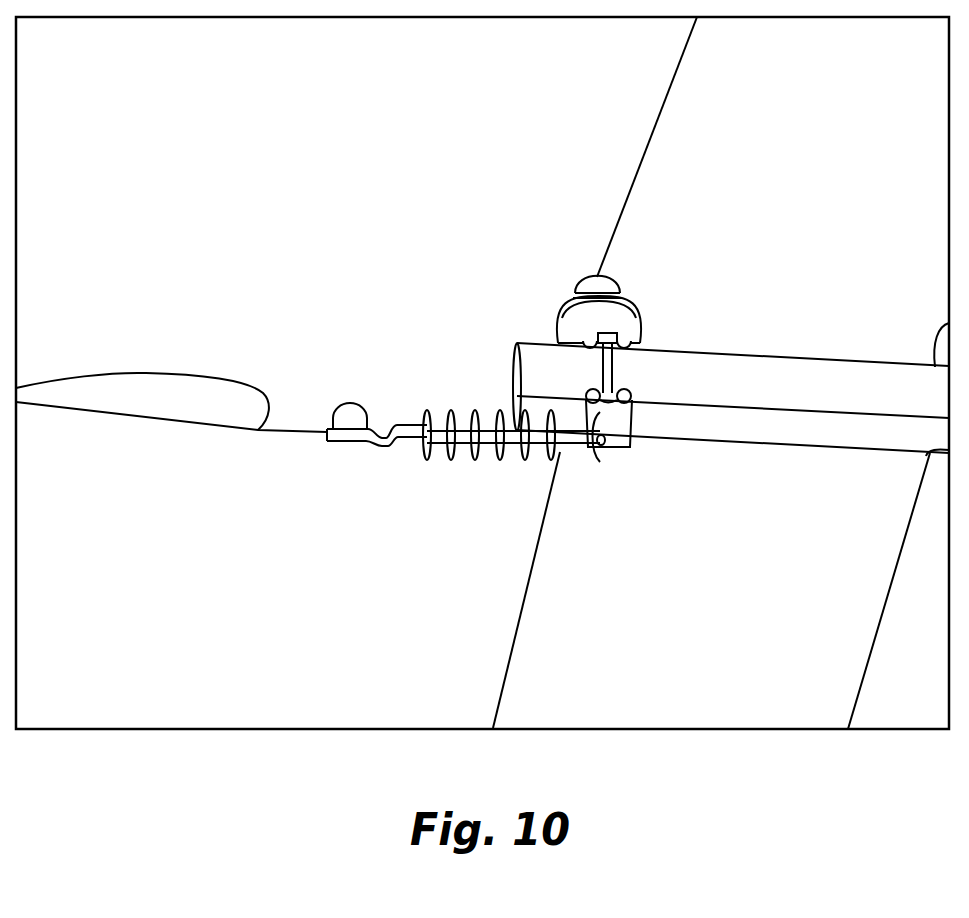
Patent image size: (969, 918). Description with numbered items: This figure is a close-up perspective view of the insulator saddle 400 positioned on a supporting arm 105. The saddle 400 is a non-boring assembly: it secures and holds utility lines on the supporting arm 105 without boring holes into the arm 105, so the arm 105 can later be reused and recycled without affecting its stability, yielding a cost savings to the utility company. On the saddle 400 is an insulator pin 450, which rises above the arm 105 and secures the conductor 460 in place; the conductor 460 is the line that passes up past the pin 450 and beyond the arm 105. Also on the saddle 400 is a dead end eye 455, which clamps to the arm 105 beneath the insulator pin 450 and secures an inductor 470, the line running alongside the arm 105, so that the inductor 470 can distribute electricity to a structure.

The supporting arm 105 is at (773, 375).
The insulator saddle 400 is at (470, 331).
The insulator pin 450 is at (577, 334).
The dead end eye 455 is at (598, 455).
The conductor 460 is at (657, 114).
The inductor 470 is at (497, 453).